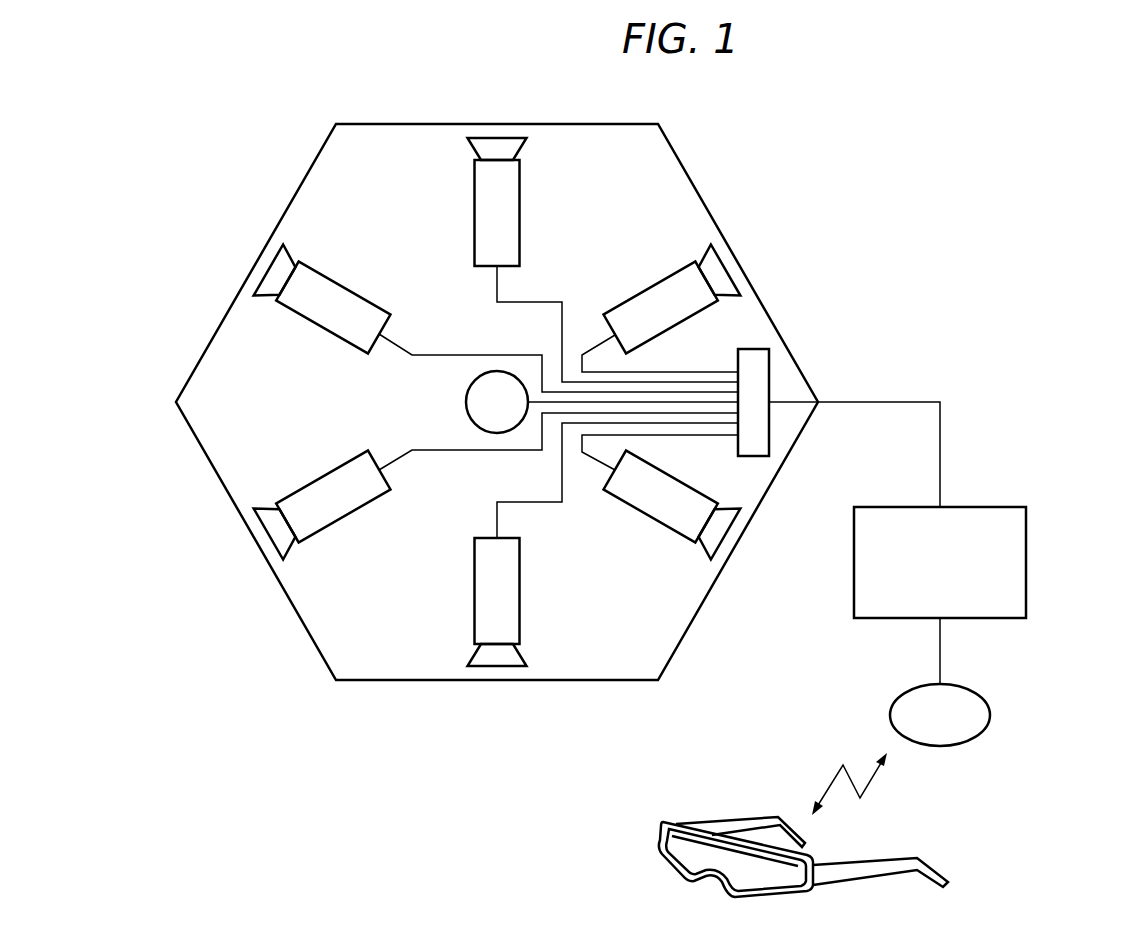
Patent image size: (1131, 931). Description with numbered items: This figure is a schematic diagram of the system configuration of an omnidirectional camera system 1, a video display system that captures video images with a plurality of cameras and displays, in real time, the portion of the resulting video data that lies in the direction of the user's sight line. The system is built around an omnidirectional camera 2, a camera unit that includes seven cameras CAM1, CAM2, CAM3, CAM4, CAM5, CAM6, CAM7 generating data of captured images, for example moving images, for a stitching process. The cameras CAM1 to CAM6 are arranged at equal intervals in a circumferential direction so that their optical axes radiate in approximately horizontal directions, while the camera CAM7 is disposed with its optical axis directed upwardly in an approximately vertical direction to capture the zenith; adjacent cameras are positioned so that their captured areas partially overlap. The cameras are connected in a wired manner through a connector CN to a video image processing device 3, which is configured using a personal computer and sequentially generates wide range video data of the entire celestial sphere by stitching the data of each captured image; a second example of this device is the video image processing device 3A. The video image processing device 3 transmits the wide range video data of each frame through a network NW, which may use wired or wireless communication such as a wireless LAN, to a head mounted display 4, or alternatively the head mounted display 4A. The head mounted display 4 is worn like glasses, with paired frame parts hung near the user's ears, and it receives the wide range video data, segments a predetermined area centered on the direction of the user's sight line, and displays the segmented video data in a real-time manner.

The omnidirectional camera system 1 is at (826, 185).
The omnidirectional camera 2 is at (582, 123).
The camera CAM1 is at (520, 196).
The camera CAM2 is at (645, 292).
The camera CAM3 is at (642, 515).
The camera CAM4 is at (520, 605).
The camera CAM5 is at (340, 518).
The camera CAM6 is at (348, 290).
The camera CAM7 is at (463, 403).
The connector CN is at (755, 373).
The video image processing device 3 is at (992, 562).
The video image processing device 3A is at (1026, 563).
The network NW is at (990, 712).
The head mounted display 4 is at (786, 818).
The head mounted display 4A is at (665, 822).